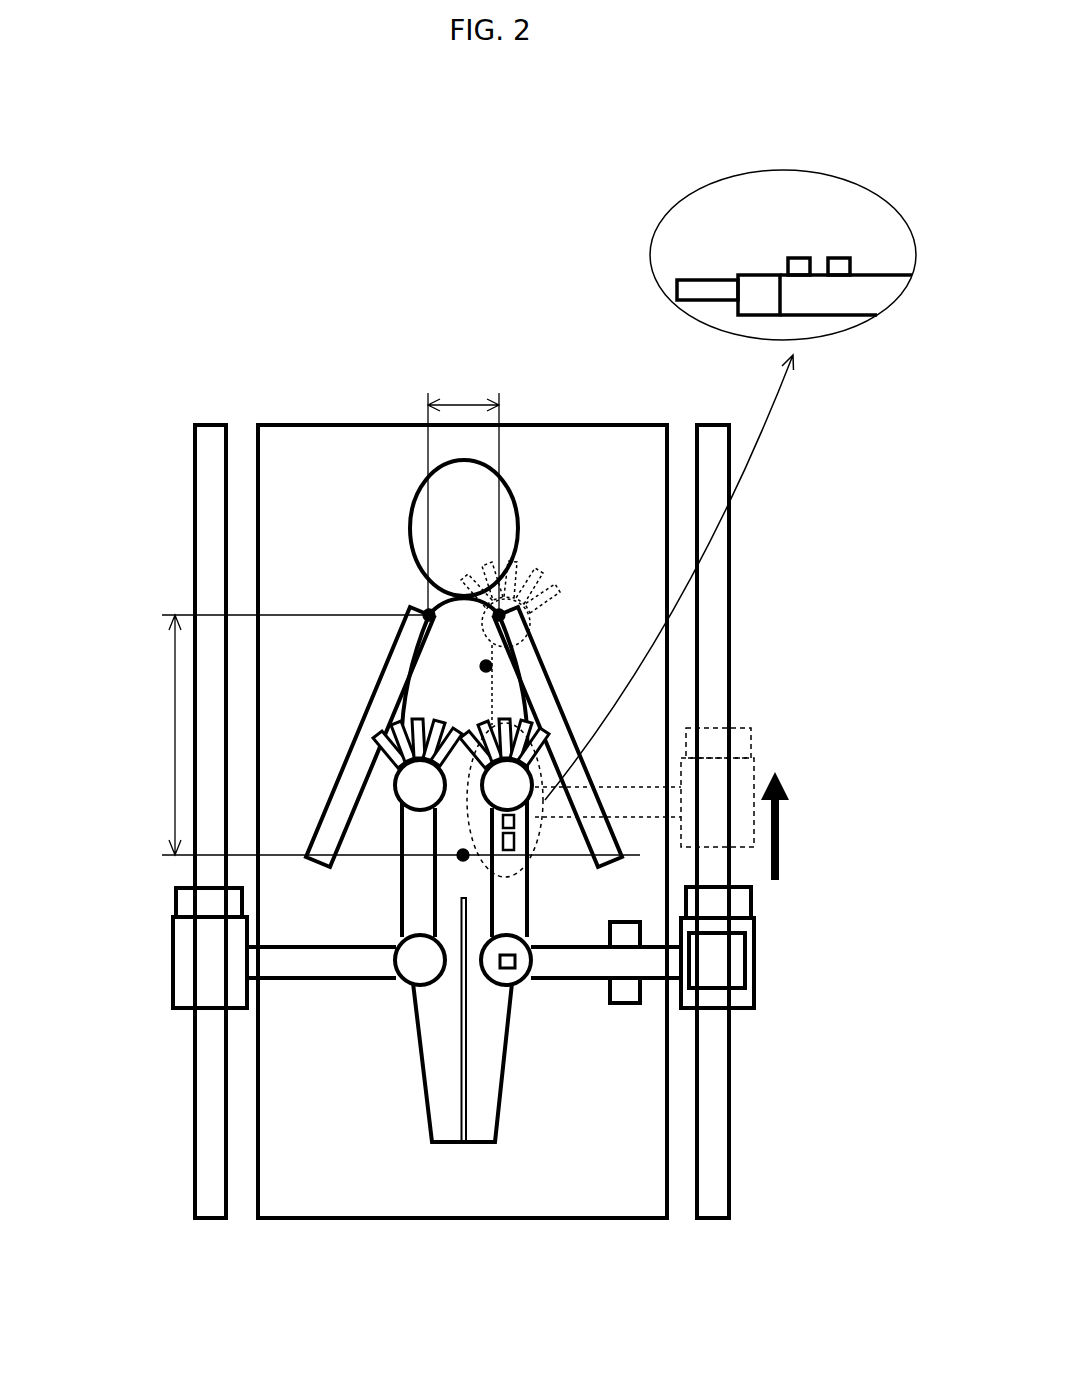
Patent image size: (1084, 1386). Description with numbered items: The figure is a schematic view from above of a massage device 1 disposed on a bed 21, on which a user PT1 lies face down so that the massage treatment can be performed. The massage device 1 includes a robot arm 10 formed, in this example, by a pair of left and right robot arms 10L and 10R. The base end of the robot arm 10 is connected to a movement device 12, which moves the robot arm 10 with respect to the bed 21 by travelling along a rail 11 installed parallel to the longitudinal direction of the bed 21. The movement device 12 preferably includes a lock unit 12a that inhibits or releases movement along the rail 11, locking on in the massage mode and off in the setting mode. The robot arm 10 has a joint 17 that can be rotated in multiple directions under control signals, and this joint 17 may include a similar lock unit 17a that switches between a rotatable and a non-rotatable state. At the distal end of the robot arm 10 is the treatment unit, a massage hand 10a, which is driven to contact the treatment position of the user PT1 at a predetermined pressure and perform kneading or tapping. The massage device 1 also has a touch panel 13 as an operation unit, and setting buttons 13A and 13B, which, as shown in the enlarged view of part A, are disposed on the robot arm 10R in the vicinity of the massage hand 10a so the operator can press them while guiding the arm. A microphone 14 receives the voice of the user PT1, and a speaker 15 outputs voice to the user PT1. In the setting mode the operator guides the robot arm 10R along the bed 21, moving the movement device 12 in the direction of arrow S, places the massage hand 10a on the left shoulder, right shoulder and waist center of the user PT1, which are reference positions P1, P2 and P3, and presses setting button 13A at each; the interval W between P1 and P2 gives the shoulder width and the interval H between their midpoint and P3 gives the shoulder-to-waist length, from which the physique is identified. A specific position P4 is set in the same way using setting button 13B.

The massage device 1 is at (414, 326).
The bed 21 is at (628, 425).
The rail 11 is at (195, 1093).
The lock unit 12a is at (176, 905).
The movement device 12 is at (173, 990).
The touch panel 13 is at (745, 960).
The setting button 13A is at (798, 258).
The setting button 13B is at (840, 258).
The robot arm 10 is at (464, 1150).
The left robot arm 10L is at (341, 978).
The right robot arm 10R is at (575, 978).
The massage hand 10a is at (547, 748).
The microphone 14 is at (627, 922).
The speaker 15 is at (627, 1003).
The joint 17 is at (467, 1020).
The lock unit 17a is at (498, 958).
The user PT1 is at (412, 487).
The part A is at (691, 519).
The arrow S is at (790, 838).
The interval W is at (463, 492).
The interval H is at (395, 735).
The reference position P1 is at (426, 613).
The reference position P2 is at (505, 618).
The reference position P3 is at (460, 857).
The specific position P4 is at (491, 664).